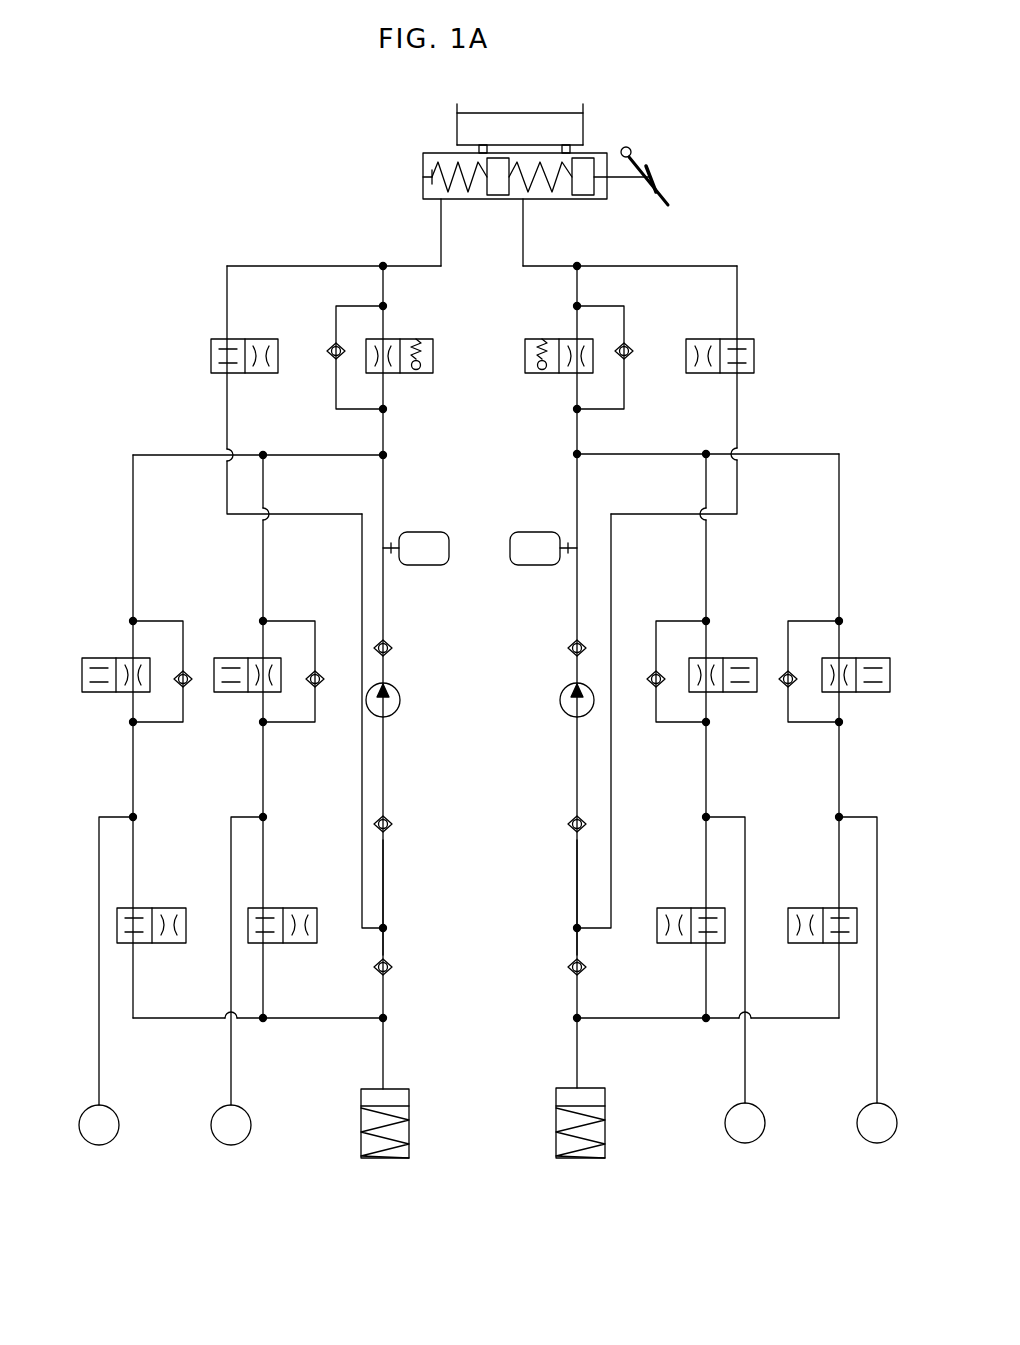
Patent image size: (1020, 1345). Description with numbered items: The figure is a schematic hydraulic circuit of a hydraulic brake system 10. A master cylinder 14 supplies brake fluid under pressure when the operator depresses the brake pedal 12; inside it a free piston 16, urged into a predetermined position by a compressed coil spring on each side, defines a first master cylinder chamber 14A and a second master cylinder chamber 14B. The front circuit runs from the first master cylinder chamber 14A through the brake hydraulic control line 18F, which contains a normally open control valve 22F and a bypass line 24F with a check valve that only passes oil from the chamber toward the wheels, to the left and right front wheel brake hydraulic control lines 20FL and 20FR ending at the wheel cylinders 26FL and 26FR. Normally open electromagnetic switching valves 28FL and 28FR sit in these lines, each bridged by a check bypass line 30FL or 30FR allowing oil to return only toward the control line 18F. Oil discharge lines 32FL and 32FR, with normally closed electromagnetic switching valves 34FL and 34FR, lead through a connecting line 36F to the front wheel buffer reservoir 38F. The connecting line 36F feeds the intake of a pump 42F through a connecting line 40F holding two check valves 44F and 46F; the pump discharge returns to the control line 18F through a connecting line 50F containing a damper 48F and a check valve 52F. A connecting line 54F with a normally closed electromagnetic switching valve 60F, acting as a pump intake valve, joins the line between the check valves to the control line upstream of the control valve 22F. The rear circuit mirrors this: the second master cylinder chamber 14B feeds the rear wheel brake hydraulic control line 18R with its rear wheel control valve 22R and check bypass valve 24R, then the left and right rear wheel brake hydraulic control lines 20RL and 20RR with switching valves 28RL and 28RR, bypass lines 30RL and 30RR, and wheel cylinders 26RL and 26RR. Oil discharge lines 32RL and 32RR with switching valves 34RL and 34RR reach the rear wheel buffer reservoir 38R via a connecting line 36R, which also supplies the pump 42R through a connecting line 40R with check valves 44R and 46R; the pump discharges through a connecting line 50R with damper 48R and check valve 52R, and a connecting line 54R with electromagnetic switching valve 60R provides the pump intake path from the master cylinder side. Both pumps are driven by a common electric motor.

The hydraulic brake system 10 is at (240, 135).
The brake pedal 12 is at (655, 178).
The master cylinder 14 is at (432, 152).
The first master cylinder chamber 14A is at (548, 198).
The second master cylinder chamber 14B is at (423, 187).
The free piston 16 is at (497, 190).
The rear wheel brake hydraulic control line 18R is at (385, 325).
The brake hydraulic control line 18F is at (575, 325).
The left rear wheel brake hydraulic control line 20RL is at (133, 470).
The right rear wheel brake hydraulic control line 20RR is at (263, 537).
The left front wheel brake hydraulic control line 20FL is at (706, 537).
The right front wheel brake hydraulic control line 20FR is at (839, 470).
The rear wheel control valve 22R is at (410, 375).
The control valve 22F is at (545, 375).
The check bypass valve 24R is at (336, 380).
The bypass line with check valve 24F is at (624, 380).
The wheel cylinder 26RL is at (105, 1145).
The wheel cylinder 26RR is at (240, 1145).
The wheel cylinder 26FL is at (740, 1143).
The wheel cylinder 26FR is at (862, 1143).
The electromagnetic switching valve 28RL is at (128, 655).
The electromagnetic switching valve 28RR is at (250, 655).
The electromagnetic switching valve 28FL is at (716, 655).
The electromagnetic switching valve 28FR is at (845, 655).
The bypass line with check valve 30RL is at (185, 725).
The bypass line with check valve 30RR is at (316, 725).
The check bypass line 30FL is at (655, 725).
The check bypass line 30FR is at (787, 705).
The oil discharge line 32RL is at (180, 1020).
The oil discharge line 32RR is at (278, 1020).
The oil discharge line 32FL is at (690, 1020).
The oil discharge line 32FR is at (805, 1020).
The electromagnetic switching valve 34RL is at (140, 945).
The electromagnetic switching valve 34RR is at (268, 945).
The electromagnetic switching valve 34FL is at (695, 945).
The electromagnetic switching valve 34FR is at (835, 906).
The connecting line 36R is at (345, 1020).
The connecting line 36F is at (628, 1020).
The rear wheel buffer reservoir 38R is at (413, 1152).
The front wheel buffer reservoir 38F is at (556, 1140).
The connecting line 40R is at (386, 930).
The connecting line 40F is at (570, 930).
The pump 42R is at (398, 708).
The pump 42F is at (565, 710).
The check valve 44R is at (392, 968).
The check valve 44F is at (572, 978).
The check valve 46R is at (392, 824).
The check valve 46F is at (568, 824).
The damper 48R is at (447, 530).
The damper 48F is at (513, 530).
The connecting line 50R is at (362, 497).
The connecting line 50F is at (577, 493).
The check valve 52R is at (392, 650).
The check valve 52F is at (568, 650).
The connecting line 54R is at (224, 298).
The connecting line 54F is at (740, 298).
The electromagnetic switching valve 60R is at (245, 340).
The electromagnetic switching valve 60F is at (722, 340).